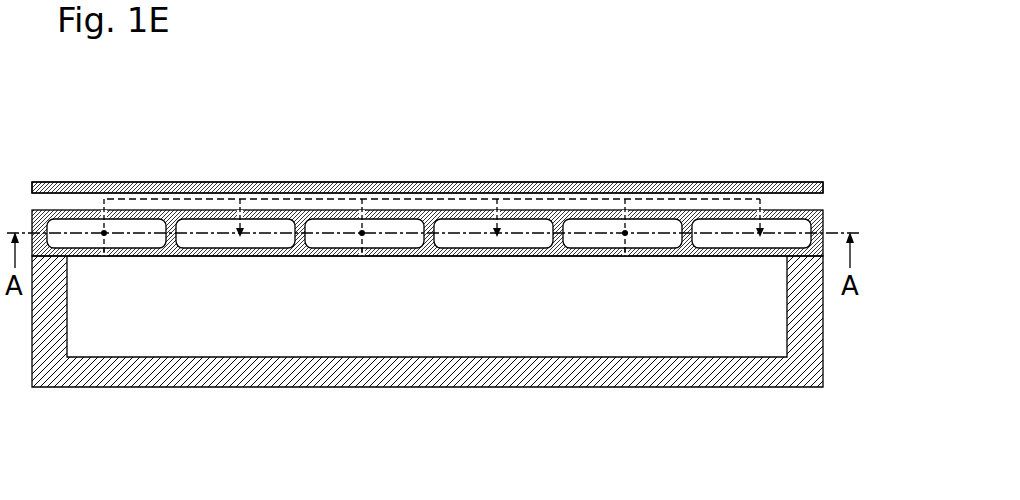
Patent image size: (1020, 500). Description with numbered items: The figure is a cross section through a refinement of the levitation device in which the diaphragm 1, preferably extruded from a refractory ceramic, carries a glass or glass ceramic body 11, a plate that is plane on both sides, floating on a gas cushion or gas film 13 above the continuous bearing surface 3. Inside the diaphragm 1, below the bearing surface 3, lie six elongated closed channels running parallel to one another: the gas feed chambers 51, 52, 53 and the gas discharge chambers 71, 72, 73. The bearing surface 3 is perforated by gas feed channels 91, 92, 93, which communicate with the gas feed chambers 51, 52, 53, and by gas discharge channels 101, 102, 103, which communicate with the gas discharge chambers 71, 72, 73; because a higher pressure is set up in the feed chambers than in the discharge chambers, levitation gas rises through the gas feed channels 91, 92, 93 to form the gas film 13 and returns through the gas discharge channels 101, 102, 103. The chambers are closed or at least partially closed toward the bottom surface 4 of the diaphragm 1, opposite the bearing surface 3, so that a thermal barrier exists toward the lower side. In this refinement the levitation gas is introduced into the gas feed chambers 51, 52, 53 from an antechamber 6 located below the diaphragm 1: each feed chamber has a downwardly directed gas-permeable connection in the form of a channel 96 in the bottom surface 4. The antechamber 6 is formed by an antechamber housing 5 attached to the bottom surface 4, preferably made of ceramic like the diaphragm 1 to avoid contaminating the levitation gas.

The diaphragm 1 is at (815, 160).
The bearing surface 3 is at (125, 210).
The bottom surface 4 is at (160, 257).
The antechamber housing 5 is at (770, 380).
The antechamber 6 is at (736, 338).
The glass or glass ceramic body 11 is at (658, 182).
The gas cushion or gas film 13 is at (71, 198).
The gas feed chamber 51 is at (92, 242).
The gas feed chamber 52 is at (335, 242).
The gas feed chamber 53 is at (588, 242).
The gas discharge chamber 71 is at (197, 242).
The gas discharge chamber 72 is at (455, 242).
The gas discharge chamber 73 is at (706, 242).
The gas feed channel 91 is at (104, 231).
The gas feed channel 92 is at (362, 231).
The gas feed channel 93 is at (625, 231).
The channel 96 is at (105, 256).
The gas discharge channel 101 is at (240, 203).
The gas discharge channel 102 is at (497, 203).
The gas discharge channel 103 is at (760, 203).